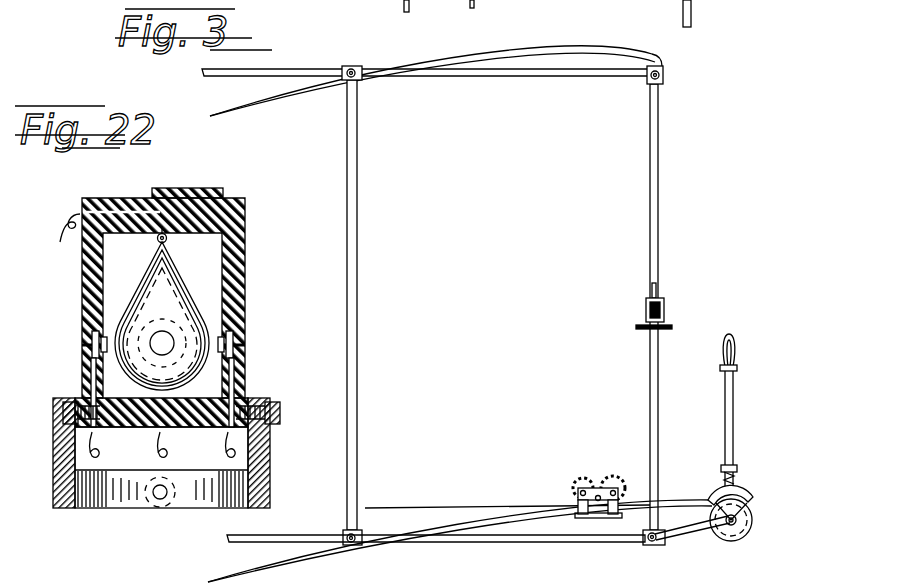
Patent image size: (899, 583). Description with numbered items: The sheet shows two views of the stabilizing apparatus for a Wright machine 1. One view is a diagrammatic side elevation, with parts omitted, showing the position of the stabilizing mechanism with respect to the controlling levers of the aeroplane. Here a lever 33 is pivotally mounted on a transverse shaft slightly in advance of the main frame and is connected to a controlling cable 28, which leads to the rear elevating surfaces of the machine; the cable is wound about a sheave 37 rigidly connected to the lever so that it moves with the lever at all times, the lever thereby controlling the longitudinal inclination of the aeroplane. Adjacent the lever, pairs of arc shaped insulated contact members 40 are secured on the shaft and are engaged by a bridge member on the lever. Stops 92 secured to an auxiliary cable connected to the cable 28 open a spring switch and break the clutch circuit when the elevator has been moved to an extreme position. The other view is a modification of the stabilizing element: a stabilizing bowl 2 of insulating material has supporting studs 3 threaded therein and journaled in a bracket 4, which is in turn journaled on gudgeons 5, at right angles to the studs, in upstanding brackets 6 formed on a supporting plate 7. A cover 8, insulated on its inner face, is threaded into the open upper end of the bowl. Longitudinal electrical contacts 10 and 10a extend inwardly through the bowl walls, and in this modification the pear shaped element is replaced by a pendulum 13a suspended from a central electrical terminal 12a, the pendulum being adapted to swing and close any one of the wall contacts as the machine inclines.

In FIG. 3, the Wright machine 1 is at (357, 347).
In FIG. 3, the stabilizing bowl 2 is at (669, 294).
In FIG. 22, the stabilizing bowl 2 is at (240, 297).
In FIG. 3, the supporting plate 7 is at (657, 330).
In FIG. 3, the controlling cable 28 is at (497, 507).
In FIG. 3, the lever 33 is at (735, 418).
In FIG. 3, the sheave 37 is at (755, 523).
In FIG. 3, the arc shaped insulated contact members 40 is at (745, 497).
In FIG. 3, the stops 92 is at (568, 512).
In FIG. 22, the supporting studs 3 is at (62, 410).
In FIG. 22, the bracket 4 is at (258, 458).
In FIG. 22, the gudgeons 5 is at (157, 494).
In FIG. 22, the upstanding brackets 6 is at (150, 510).
In FIG. 22, the cover 8 is at (219, 198).
In FIG. 22, the longitudinal electrical contact 10 is at (82, 345).
In FIG. 22, the longitudinal electrical contact 10a is at (247, 343).
In FIG. 22, the central electrical terminal 12a is at (167, 240).
In FIG. 22, the pendulum 13a is at (147, 307).